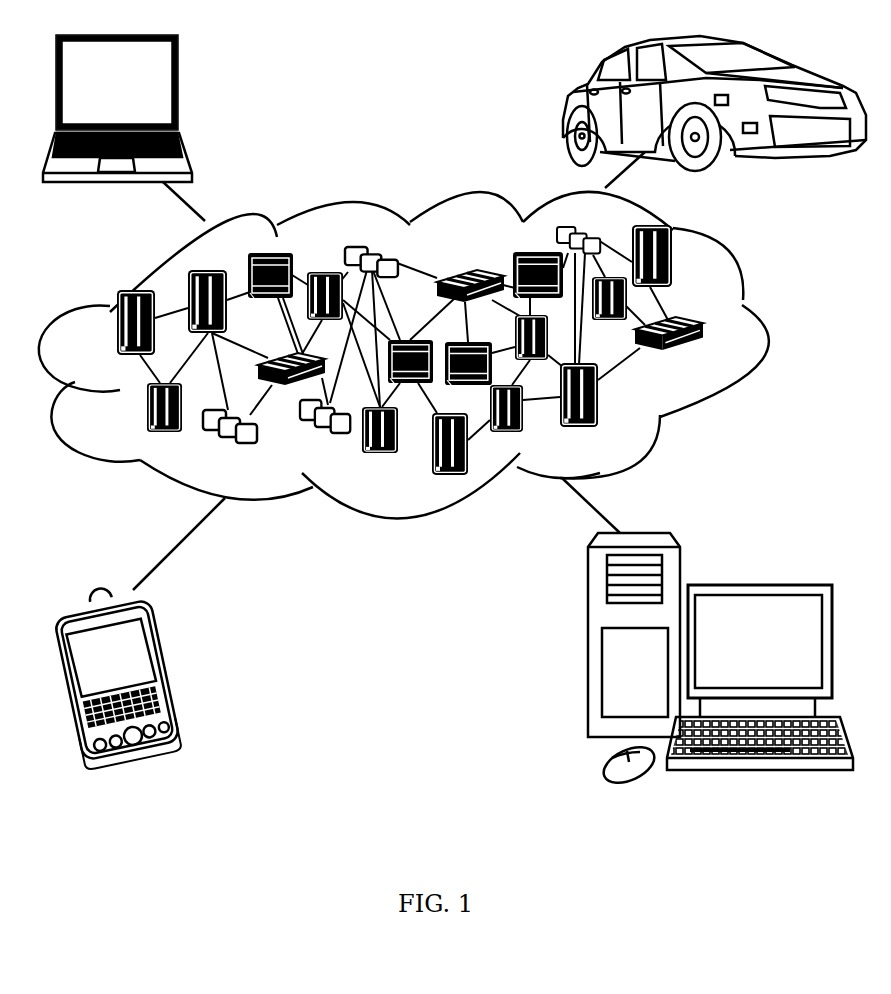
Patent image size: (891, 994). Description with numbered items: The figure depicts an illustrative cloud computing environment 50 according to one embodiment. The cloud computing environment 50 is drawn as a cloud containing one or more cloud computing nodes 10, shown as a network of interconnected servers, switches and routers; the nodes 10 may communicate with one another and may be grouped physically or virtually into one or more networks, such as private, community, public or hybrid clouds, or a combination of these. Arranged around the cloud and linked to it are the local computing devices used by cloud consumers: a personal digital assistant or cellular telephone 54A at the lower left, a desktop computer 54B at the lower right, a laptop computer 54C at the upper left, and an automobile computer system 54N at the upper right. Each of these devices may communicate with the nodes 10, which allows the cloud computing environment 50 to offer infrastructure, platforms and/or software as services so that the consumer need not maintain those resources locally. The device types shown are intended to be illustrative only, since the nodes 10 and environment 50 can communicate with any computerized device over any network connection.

The cloud computing nodes 10 is at (722, 360).
The cloud computing environment 50 is at (758, 332).
The personal digital assistant or cellular telephone 54A is at (172, 668).
The desktop computer 54B is at (756, 585).
The laptop computer 54C is at (180, 91).
The automobile computer system 54N is at (564, 104).